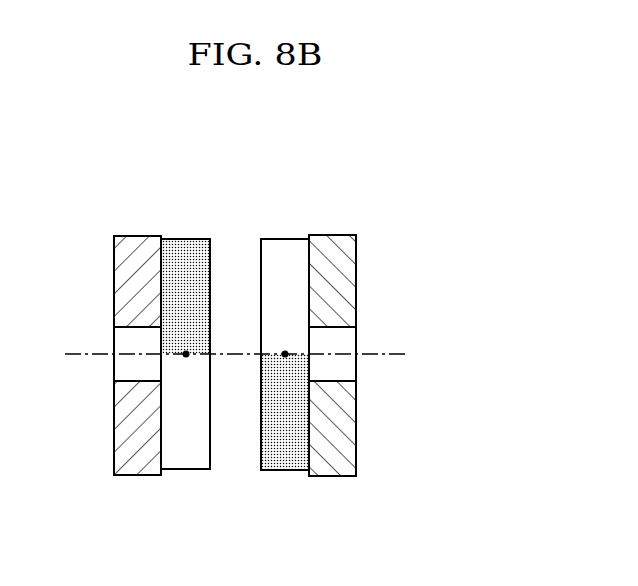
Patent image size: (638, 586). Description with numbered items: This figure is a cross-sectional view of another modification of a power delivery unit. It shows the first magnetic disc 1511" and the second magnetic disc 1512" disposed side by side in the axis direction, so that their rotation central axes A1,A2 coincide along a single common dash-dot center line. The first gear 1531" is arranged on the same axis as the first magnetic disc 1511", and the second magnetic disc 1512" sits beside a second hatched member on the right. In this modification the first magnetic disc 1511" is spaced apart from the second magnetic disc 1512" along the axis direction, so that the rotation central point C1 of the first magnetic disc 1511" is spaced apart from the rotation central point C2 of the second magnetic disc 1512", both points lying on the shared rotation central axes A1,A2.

The first gear 1531 is at (139, 240).
The first magnetic disc 1511 is at (189, 239).
The second magnetic disc 1512 is at (286, 239).
The rotation central point C1 is at (186, 357).
The rotation central point C2 is at (285, 357).
The rotation central axes A1,A2 is at (266, 354).